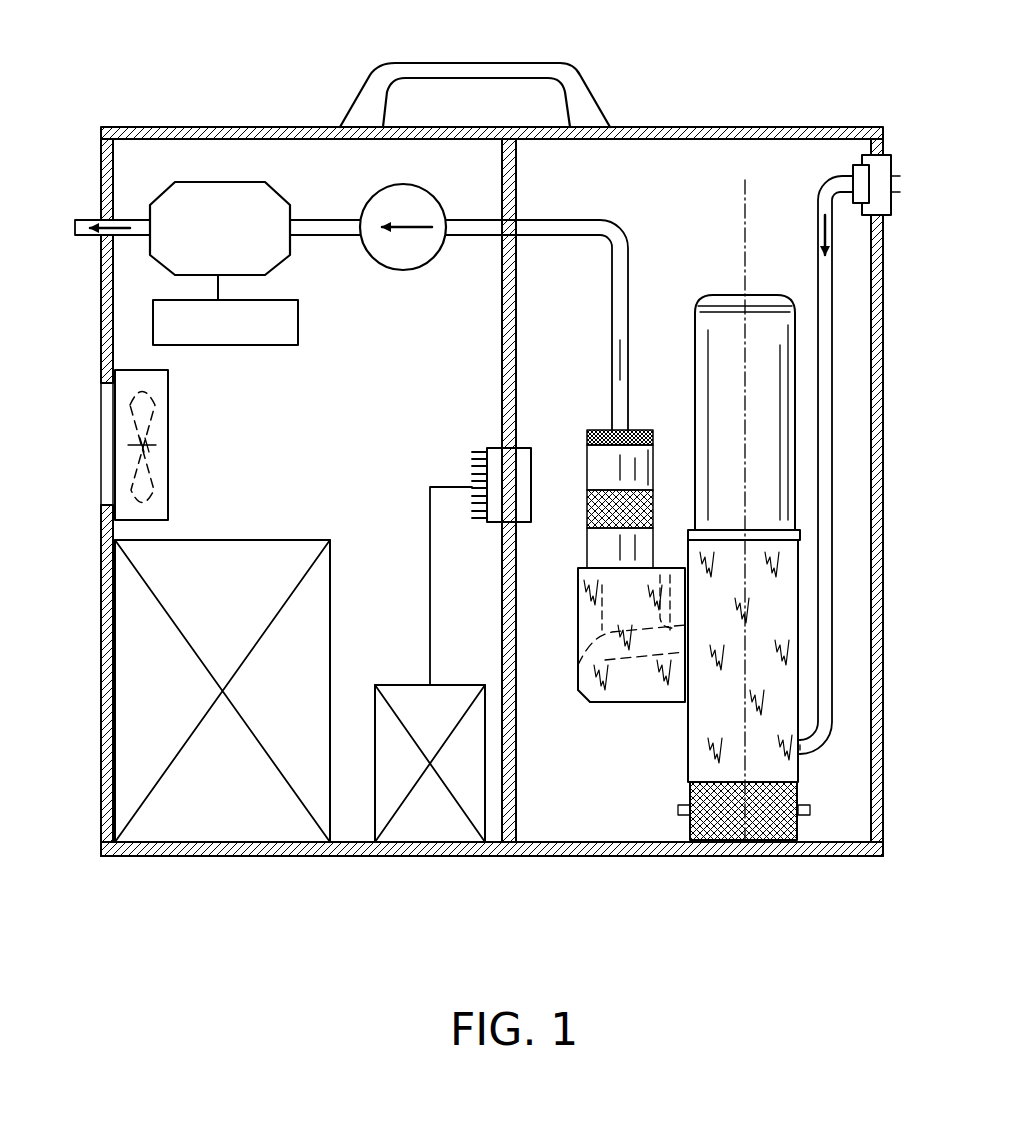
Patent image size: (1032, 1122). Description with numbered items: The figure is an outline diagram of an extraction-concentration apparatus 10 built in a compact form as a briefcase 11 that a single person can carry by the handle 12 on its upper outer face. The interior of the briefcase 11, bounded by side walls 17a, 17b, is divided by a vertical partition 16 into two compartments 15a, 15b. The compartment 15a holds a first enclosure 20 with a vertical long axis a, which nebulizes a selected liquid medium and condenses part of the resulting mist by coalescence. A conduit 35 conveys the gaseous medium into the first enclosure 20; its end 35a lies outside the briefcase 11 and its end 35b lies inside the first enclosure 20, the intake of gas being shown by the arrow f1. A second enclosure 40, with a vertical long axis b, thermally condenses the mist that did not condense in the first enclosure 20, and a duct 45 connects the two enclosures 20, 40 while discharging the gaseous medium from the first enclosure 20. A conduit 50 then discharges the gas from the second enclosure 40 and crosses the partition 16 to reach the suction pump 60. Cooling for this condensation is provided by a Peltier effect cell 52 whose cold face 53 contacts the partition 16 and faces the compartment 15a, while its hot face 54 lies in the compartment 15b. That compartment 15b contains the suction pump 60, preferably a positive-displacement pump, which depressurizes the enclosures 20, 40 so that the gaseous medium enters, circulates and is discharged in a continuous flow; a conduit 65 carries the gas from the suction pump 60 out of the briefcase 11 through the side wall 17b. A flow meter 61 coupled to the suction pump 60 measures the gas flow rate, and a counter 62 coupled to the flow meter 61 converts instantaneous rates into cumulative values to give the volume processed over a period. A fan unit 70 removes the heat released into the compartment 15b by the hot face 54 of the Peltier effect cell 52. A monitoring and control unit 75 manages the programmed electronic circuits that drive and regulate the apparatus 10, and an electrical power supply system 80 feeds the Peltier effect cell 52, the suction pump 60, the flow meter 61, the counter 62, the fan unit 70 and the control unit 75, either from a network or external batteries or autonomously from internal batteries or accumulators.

The extraction-concentration apparatus 10 is at (492, 452).
The briefcase 11 is at (315, 128).
The handle 12 is at (466, 72).
The compartment 15a is at (648, 160).
The compartment 15b is at (283, 161).
The vertical partition 16 is at (506, 360).
The side wall 17a is at (883, 825).
The side wall 17b is at (103, 840).
The first enclosure 20 is at (692, 730).
The conduit 35 is at (820, 183).
The end 35a is at (894, 172).
The end 35b is at (812, 812).
The second enclosure 40 is at (598, 458).
The duct 45 is at (582, 668).
The conduit 50 is at (600, 226).
The Peltier effect cell 52 is at (450, 534).
The cold face 53 is at (524, 454).
The hot face 54 is at (456, 480).
The suction pump 60 is at (396, 262).
The flow meter 61 is at (210, 190).
The counter 62 is at (245, 335).
The conduit 65 is at (128, 230).
The fan unit 70 is at (162, 476).
The monitoring and control unit 75 is at (405, 827).
The electrical power supply system 80 is at (253, 822).
The vertical long axis a is at (742, 207).
The vertical long axis b is at (620, 360).
The arrow f1 is at (820, 240).